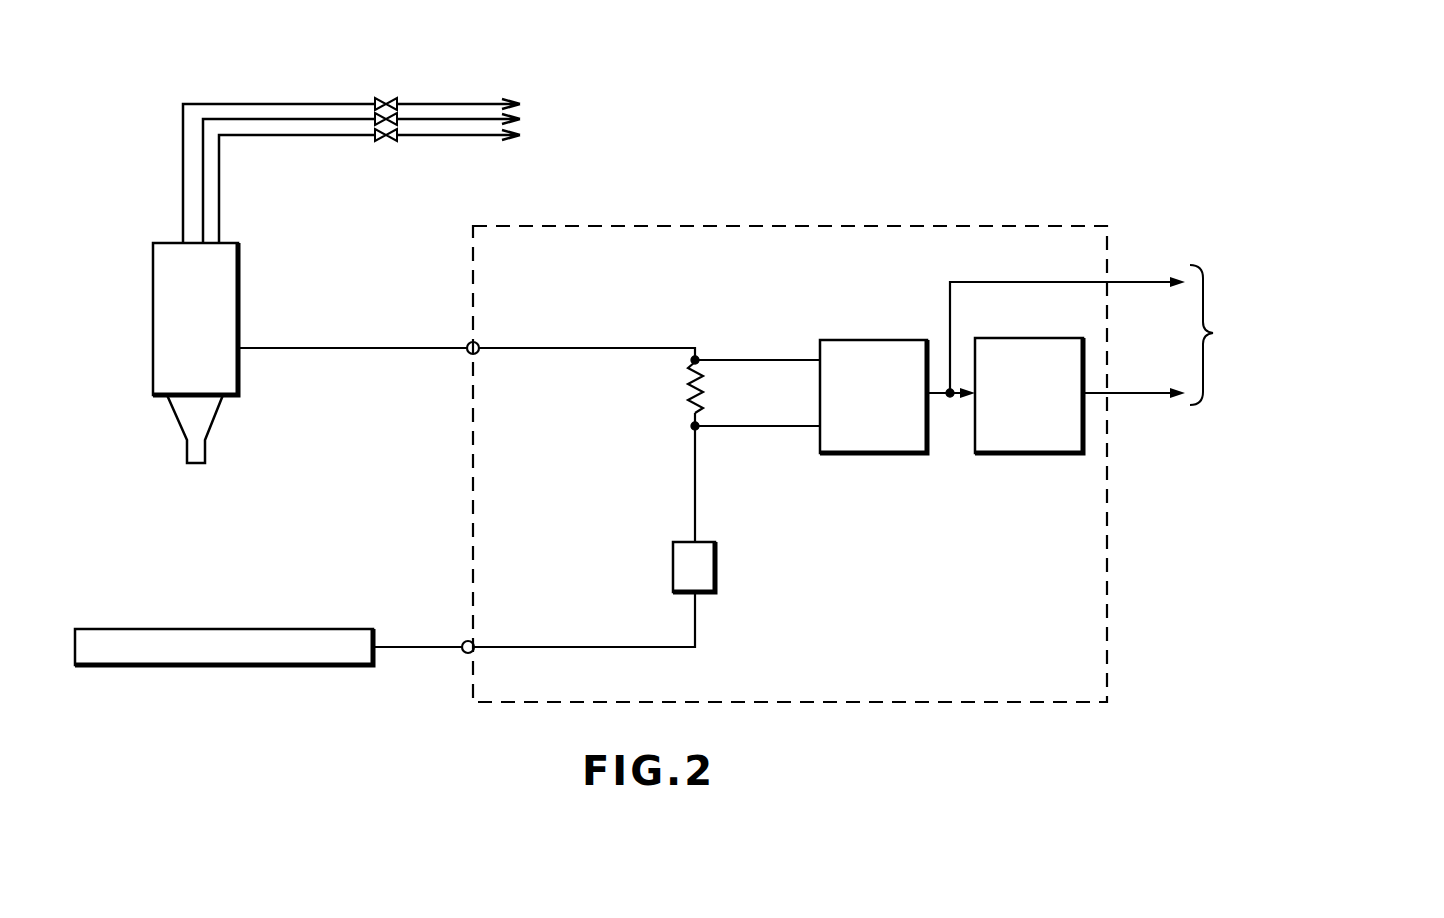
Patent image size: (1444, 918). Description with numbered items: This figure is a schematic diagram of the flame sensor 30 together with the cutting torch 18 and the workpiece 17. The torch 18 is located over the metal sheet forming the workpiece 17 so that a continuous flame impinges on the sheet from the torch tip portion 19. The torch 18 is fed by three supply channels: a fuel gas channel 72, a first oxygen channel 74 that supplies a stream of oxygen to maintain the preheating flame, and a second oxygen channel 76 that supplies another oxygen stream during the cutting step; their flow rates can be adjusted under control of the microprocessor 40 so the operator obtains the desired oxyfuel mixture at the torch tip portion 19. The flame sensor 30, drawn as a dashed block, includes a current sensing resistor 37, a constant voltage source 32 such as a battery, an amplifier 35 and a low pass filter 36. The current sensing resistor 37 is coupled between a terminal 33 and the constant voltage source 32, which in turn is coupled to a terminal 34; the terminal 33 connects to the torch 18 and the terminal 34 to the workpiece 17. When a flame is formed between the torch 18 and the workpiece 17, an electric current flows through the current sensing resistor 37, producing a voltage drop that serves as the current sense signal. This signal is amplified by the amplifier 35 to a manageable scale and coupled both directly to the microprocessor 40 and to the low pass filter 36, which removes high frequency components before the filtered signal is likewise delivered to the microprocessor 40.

The workpiece 17 is at (262, 666).
The torch 18 is at (231, 291).
The torch tip portion 19 is at (207, 418).
The flame sensor 30 is at (775, 226).
The constant voltage source 32 is at (717, 569).
The terminal 33 is at (479, 345).
The terminal 34 is at (473, 652).
The amplifier 35 is at (862, 340).
The low pass filter 36 is at (1023, 338).
The current sensing resistor 37 is at (710, 374).
The microprocessor 40 is at (1307, 335).
The fuel gas channel 72 is at (386, 98).
The first oxygen channel 74 is at (398, 117).
The second oxygen channel 76 is at (387, 142).